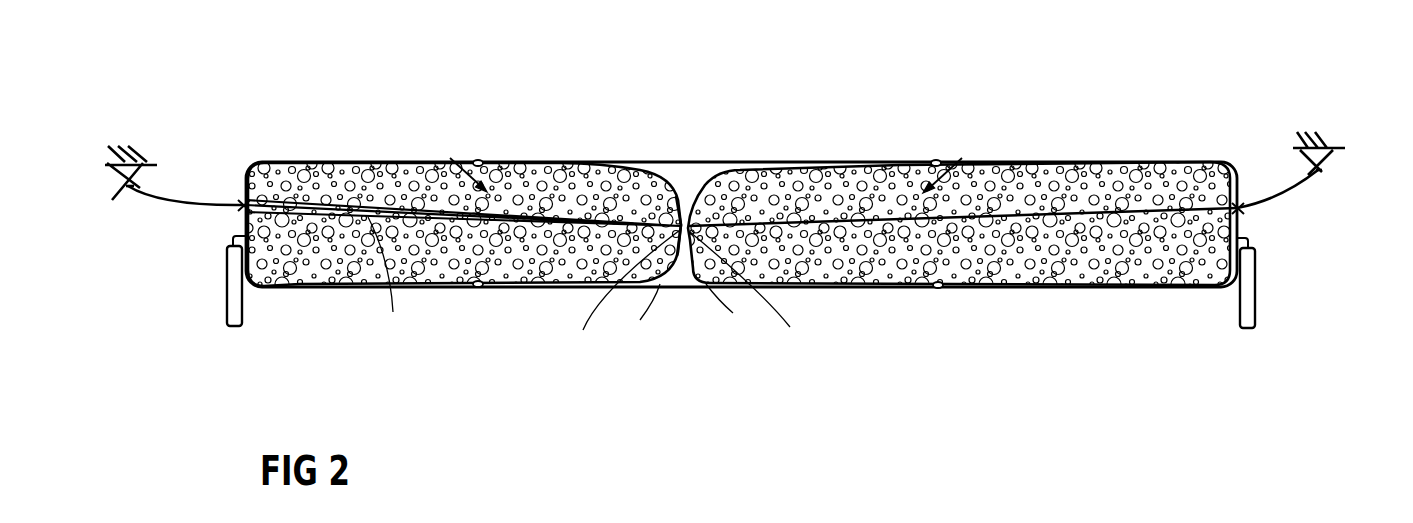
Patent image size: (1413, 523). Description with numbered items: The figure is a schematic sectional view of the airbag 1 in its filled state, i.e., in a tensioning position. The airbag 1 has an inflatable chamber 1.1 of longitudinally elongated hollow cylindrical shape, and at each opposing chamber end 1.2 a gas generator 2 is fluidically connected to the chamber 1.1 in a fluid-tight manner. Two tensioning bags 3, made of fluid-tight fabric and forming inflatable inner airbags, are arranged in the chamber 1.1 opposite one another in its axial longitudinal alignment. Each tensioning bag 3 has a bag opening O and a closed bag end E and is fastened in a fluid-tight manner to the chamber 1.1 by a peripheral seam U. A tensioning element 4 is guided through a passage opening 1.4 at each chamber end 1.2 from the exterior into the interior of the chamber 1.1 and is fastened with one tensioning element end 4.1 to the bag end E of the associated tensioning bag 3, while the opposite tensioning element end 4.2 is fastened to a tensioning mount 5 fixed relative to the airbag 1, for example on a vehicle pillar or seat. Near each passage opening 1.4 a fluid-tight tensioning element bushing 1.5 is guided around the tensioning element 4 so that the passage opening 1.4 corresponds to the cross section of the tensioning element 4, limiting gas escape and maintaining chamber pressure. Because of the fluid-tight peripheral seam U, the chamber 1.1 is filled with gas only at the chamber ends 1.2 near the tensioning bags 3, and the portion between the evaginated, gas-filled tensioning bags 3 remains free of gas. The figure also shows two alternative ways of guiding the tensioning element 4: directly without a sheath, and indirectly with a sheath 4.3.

The airbag 1 is at (842, 104).
The inflatable chamber 1.1 is at (695, 163).
The chamber end 1.2 is at (263, 163).
The passage opening 1.4 is at (243, 203).
The tensioning element bushing 1.5 is at (243, 213).
The gas generator 2 is at (232, 326).
The tensioning bag 3 is at (598, 165).
The tensioning element 4 is at (165, 204).
The tensioning element end 4.1 is at (682, 294).
The tensioning element end 4.2 is at (130, 184).
The sheath 4.3 is at (388, 286).
The tensioning mount 5 is at (120, 150).
The bag end E is at (688, 319).
The bag opening O is at (450, 158).
The peripheral seam U is at (478, 160).